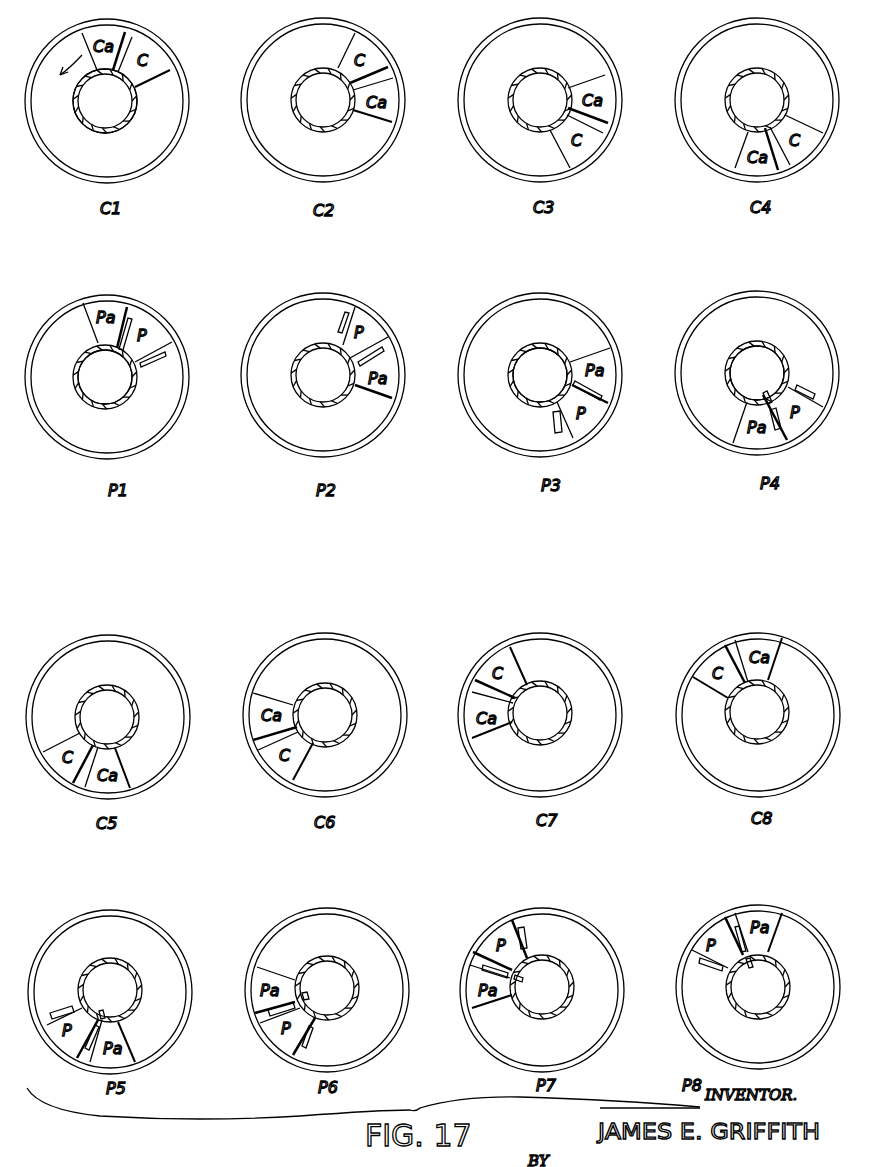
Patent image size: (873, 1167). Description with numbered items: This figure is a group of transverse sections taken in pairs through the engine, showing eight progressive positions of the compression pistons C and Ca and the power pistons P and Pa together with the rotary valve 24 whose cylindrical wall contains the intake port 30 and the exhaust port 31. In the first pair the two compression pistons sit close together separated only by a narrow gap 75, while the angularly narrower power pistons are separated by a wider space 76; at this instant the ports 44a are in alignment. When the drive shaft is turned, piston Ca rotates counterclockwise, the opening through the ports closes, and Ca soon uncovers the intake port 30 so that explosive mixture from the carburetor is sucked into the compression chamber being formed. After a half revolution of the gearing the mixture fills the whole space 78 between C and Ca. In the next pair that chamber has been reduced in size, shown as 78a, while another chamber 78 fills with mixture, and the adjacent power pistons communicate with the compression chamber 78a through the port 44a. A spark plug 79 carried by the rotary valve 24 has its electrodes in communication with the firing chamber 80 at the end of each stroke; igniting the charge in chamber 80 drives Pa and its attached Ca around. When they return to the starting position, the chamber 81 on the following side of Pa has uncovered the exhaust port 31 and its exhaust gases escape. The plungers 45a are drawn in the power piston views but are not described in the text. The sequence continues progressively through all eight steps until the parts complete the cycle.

The rotary valve 24 is at (78, 112).
The intake port 30 is at (107, 72).
The exhaust port 31 is at (132, 367).
The gap 75 is at (132, 37).
The space 76 is at (128, 310).
The compression chamber space 78 is at (431, 100).
The compression chamber 78a is at (602, 125).
The spark plug 79 is at (558, 382).
The firing chamber 80 is at (607, 402).
The chamber 81 is at (757, 373).
The port 44a is at (132, 317).
The plunger 45a is at (170, 355).